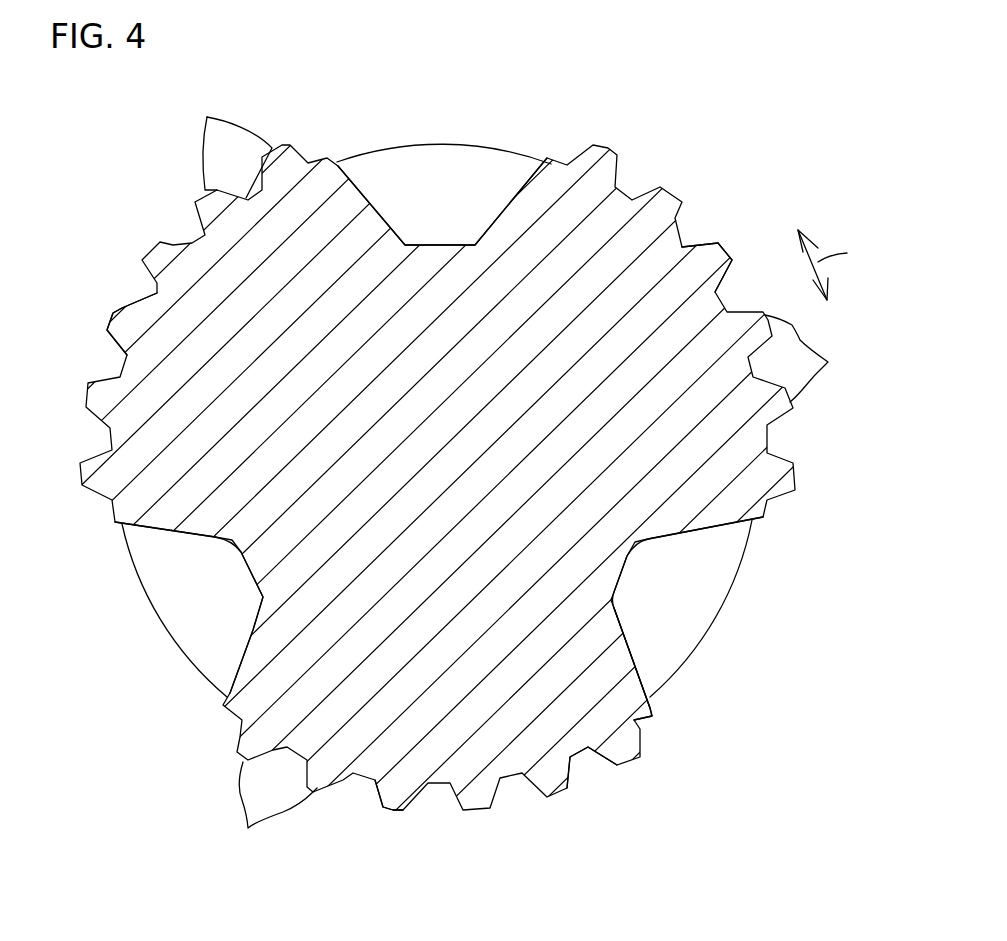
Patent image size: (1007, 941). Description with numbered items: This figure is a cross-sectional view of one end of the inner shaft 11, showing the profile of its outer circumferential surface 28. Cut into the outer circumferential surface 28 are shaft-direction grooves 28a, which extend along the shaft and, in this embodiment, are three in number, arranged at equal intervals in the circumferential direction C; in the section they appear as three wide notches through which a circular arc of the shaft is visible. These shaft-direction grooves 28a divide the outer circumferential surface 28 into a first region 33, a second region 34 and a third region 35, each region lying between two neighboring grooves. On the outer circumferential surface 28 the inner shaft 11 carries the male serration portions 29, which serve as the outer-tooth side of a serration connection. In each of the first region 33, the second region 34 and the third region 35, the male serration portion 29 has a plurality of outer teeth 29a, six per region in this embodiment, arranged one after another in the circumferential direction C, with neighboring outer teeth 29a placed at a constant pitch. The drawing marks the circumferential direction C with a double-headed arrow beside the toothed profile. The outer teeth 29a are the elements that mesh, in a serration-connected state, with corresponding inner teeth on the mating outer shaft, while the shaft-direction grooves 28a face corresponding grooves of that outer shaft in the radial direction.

The inner shaft 11 is at (563, 160).
The outer circumferential surface 28 is at (647, 719).
The shaft-direction grooves 28a is at (497, 222).
The male serration portions 29 is at (570, 770).
The outer teeth 29a is at (207, 117).
The first region 33 is at (747, 263).
The second region 34 is at (393, 810).
The third region 35 is at (110, 313).
The circumferential direction C is at (836, 265).